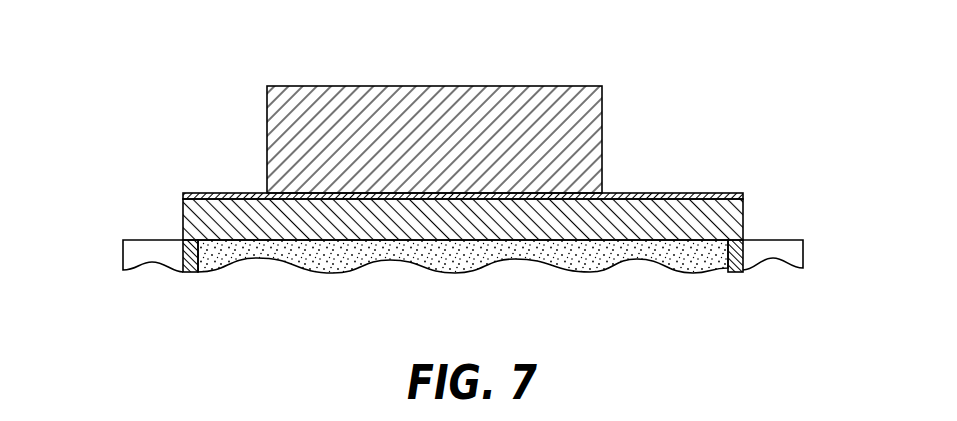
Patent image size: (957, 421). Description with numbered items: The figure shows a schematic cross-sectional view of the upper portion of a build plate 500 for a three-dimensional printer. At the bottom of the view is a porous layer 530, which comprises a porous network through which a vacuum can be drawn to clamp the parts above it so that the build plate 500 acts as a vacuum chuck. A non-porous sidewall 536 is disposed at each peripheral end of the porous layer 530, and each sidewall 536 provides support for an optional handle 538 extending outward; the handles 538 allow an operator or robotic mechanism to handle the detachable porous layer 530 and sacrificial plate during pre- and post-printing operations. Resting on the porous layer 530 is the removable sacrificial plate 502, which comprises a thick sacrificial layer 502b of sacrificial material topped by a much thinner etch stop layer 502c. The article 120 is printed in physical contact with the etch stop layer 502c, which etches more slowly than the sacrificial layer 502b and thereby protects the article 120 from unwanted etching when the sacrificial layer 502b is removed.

The article 120 is at (483, 87).
The build plate 500 is at (459, 192).
The sacrificial plate 502 is at (485, 190).
The sacrificial layer 502b is at (192, 208).
The etch stop layer 502c is at (743, 197).
The porous layer 530 is at (575, 262).
The non-porous sidewall 536 is at (190, 273).
The handle 538 is at (123, 262).